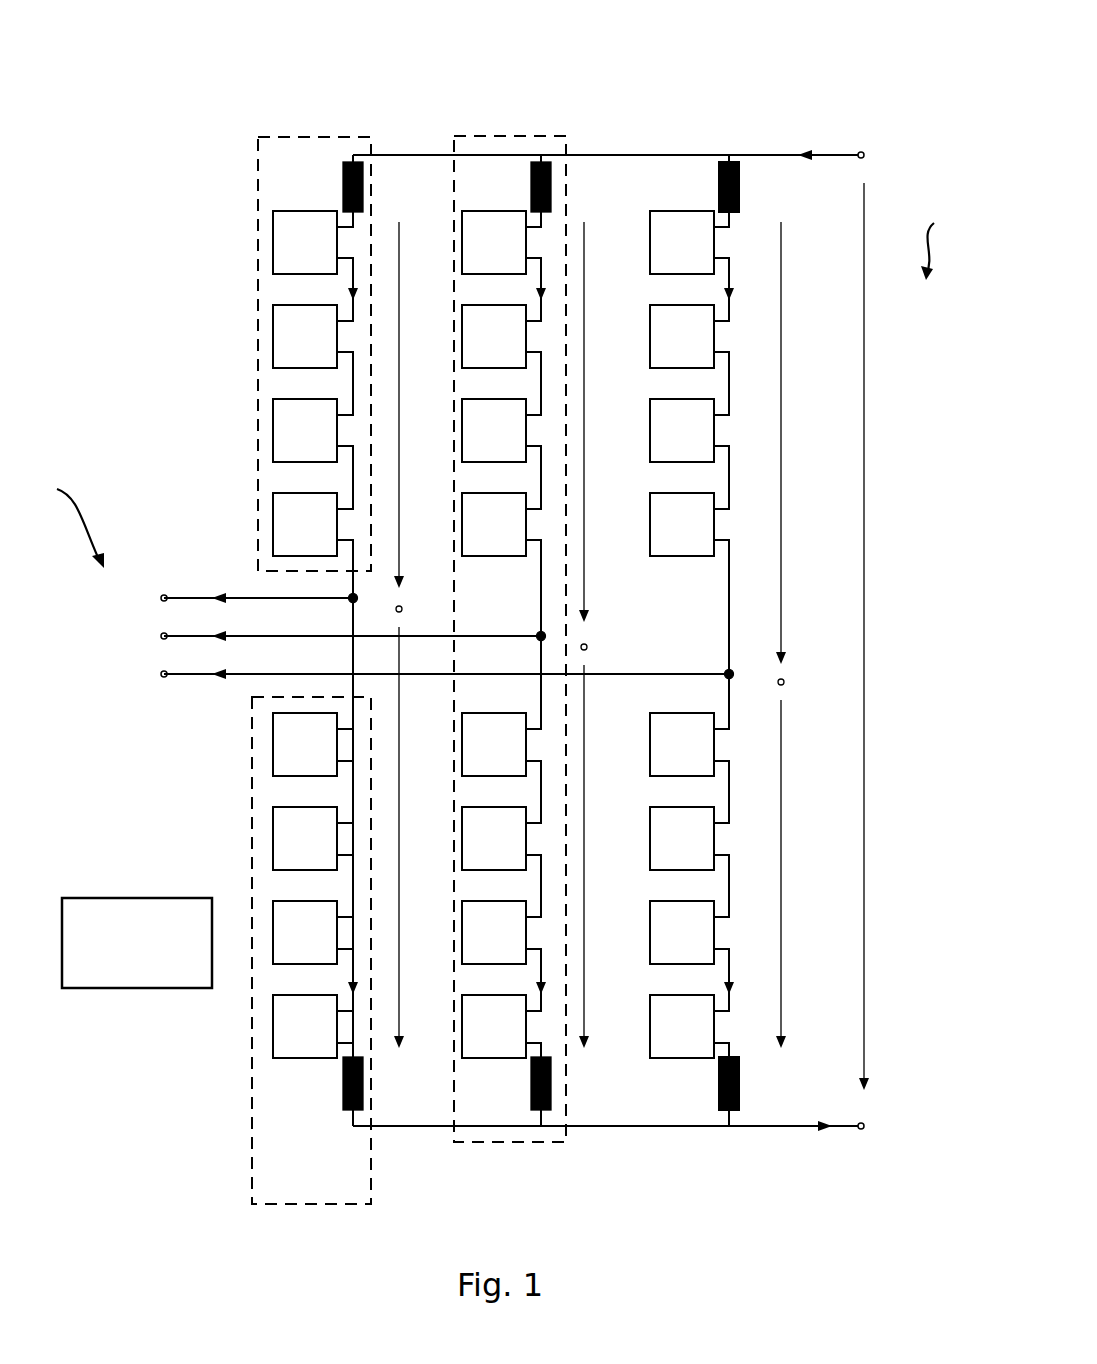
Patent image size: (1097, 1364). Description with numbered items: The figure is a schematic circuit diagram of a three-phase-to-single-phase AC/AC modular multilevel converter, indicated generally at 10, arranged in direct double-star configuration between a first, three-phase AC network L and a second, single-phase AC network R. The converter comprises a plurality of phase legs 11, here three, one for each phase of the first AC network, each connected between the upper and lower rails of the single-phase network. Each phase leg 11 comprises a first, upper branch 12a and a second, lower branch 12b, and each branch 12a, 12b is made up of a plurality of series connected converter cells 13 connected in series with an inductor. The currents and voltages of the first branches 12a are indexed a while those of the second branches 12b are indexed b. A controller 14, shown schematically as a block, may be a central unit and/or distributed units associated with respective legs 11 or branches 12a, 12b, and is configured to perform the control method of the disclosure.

The converter 10 is at (851, 86).
The phase leg 11 is at (510, 614).
The first branch 12a is at (314, 615).
The second branch 12b is at (311, 950).
The converter cell 13 is at (305, 634).
The controller 14 is at (137, 943).